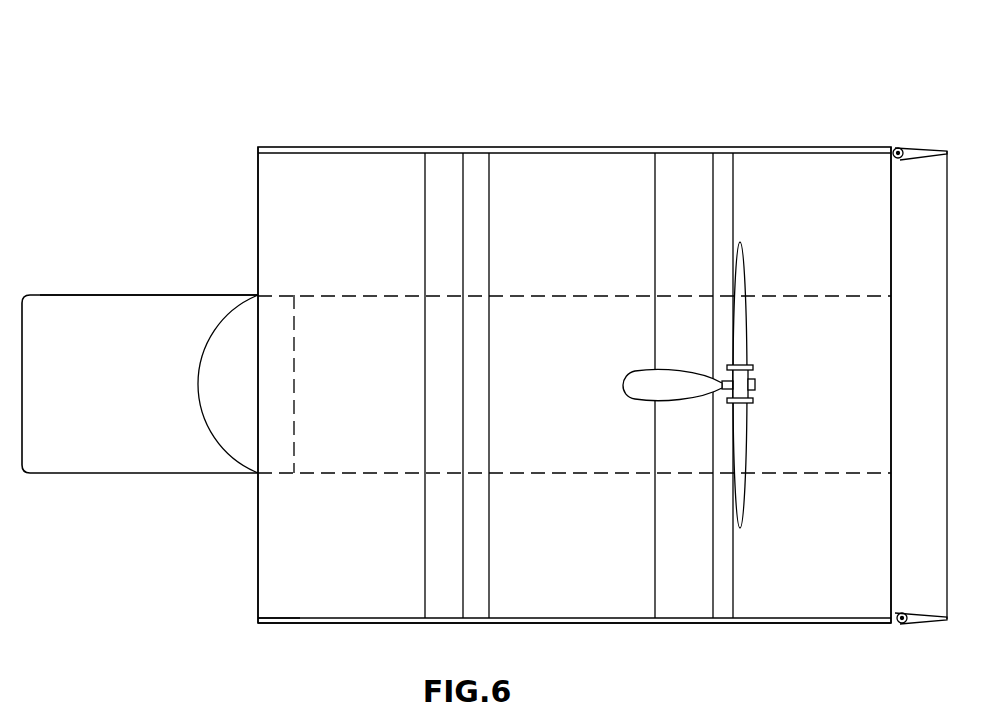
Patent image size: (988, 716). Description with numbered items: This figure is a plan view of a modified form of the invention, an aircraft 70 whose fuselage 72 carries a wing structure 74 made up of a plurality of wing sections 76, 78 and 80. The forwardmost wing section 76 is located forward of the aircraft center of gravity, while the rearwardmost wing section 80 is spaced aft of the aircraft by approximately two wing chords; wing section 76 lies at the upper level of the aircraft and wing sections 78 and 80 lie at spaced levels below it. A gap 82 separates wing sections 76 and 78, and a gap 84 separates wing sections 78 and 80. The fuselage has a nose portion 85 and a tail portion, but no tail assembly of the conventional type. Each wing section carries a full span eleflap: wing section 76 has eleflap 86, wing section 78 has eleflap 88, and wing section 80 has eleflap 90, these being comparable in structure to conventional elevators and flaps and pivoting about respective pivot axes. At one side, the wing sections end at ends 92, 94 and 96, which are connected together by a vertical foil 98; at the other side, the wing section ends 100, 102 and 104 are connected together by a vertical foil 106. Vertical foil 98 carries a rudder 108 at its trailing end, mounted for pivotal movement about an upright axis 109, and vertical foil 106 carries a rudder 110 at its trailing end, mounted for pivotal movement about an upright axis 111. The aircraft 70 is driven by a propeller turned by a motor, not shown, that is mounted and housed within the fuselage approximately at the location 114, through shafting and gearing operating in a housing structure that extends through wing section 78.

The aircraft 70 is at (812, 118).
The fuselage 72 is at (146, 478).
The wing structure 74 is at (257, 640).
The forwardmost wing section 76 is at (292, 218).
The wing section 78 is at (533, 210).
The rearwardmost wing section 80 is at (782, 200).
The gap 82 is at (475, 187).
The gap 84 is at (722, 185).
The nose portion 85 is at (50, 325).
The eleflap 86 is at (437, 187).
The eleflap 88 is at (680, 193).
The eleflap 90 is at (918, 183).
The wing section end 92 is at (356, 600).
The wing section end 94 is at (607, 600).
The wing section end 96 is at (789, 600).
The vertical foil 98 is at (641, 623).
The wing section end 100 is at (337, 180).
The wing section end 102 is at (588, 185).
The wing section end 104 is at (855, 168).
The vertical foil 106 is at (613, 152).
The rudder 108 is at (935, 622).
The upright axis 109 is at (900, 624).
The rudder 110 is at (932, 147).
The upright axis 111 is at (895, 167).
The motor location 114 is at (655, 378).